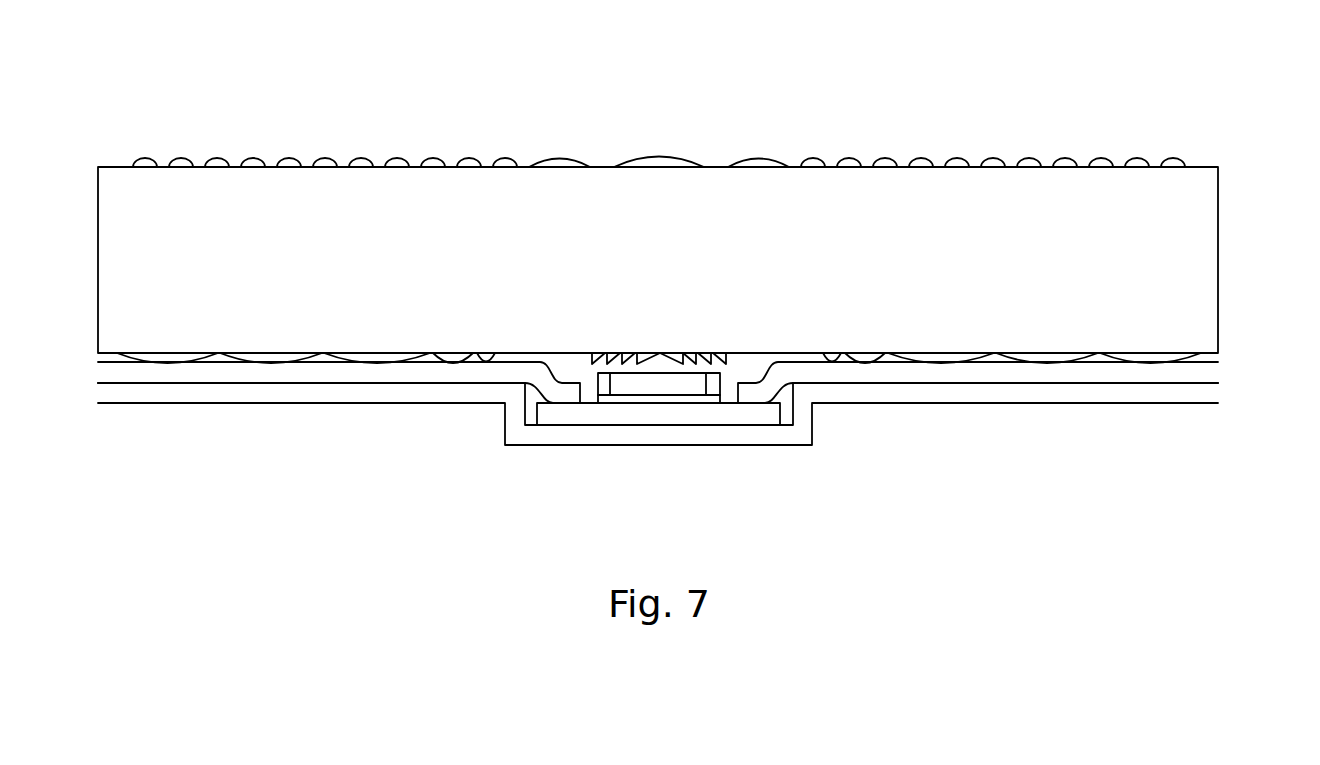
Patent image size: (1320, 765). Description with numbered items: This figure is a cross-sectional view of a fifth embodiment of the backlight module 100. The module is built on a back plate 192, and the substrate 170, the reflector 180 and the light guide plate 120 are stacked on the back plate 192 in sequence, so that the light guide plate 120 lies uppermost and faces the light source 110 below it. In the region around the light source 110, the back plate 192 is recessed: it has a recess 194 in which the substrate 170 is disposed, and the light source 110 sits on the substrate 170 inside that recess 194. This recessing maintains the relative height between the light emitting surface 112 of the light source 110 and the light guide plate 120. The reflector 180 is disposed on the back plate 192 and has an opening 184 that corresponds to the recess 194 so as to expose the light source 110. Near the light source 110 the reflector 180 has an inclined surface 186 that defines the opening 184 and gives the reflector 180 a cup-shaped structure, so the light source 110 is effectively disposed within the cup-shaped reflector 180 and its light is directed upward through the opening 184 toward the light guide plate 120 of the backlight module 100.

The backlight module 100 is at (157, 121).
The light guide plate 120 is at (1207, 272).
The opening 184 is at (567, 362).
The inclined surface 186 is at (767, 387).
The reflector 180 is at (1207, 373).
The back plate 192 is at (1207, 392).
The recess 194 is at (527, 412).
The substrate 170 is at (660, 412).
The light source 110 is at (627, 382).
The light emitting surface 112 is at (695, 373).